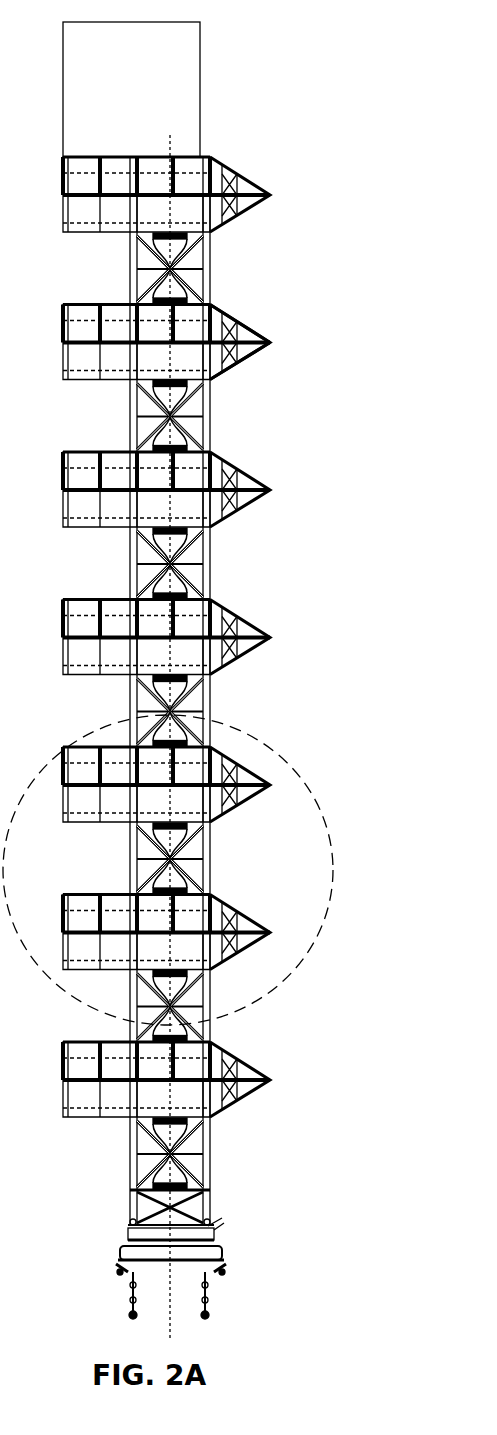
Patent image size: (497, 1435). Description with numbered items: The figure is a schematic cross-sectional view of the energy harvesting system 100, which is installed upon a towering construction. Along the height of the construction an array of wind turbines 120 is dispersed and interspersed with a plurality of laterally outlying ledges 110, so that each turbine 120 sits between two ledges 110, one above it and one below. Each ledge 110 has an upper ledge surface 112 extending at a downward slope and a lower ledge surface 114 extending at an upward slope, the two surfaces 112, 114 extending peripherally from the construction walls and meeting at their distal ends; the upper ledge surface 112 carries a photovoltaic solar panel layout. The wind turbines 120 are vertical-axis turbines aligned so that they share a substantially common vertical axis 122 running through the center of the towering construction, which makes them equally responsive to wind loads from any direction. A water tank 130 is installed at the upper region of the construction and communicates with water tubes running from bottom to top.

The energy harvesting system 100 is at (343, 105).
The laterally outlying ledge 110 is at (277, 283).
The upper ledge surface 112 is at (258, 325).
The lower ledge surface 114 is at (260, 358).
The wind turbine 120 is at (190, 410).
The vertical axis 122 is at (172, 147).
The water tank 130 is at (200, 48).